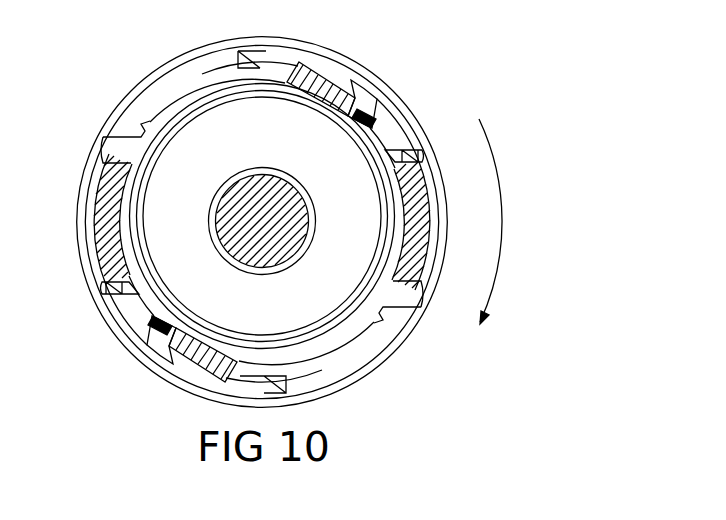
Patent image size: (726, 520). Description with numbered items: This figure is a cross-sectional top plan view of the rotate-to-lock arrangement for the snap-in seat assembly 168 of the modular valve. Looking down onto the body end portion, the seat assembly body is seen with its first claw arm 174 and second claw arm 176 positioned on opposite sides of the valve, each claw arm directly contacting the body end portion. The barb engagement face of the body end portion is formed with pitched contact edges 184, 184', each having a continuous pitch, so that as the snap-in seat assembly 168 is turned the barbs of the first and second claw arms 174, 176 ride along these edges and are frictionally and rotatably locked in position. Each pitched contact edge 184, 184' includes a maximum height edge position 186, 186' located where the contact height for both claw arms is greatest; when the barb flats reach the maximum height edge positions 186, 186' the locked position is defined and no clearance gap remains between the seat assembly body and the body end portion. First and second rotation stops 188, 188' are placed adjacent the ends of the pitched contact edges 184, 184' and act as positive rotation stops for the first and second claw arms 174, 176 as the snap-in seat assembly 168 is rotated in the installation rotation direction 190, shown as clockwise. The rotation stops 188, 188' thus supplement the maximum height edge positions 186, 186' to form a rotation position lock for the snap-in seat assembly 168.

The snap-in seat assembly 168 is at (470, 73).
The first claw arm 174 is at (318, 73).
The second claw arm 176 is at (205, 370).
The pitched contact edge 184 is at (191, 168).
The pitched contact edge 184' is at (337, 276).
The maximum height edge position 186 is at (409, 120).
The maximum height edge position 186' is at (109, 340).
The first rotation stop 188 is at (389, 93).
The second rotation stop 188' is at (136, 357).
The installation rotation direction 190 is at (502, 228).